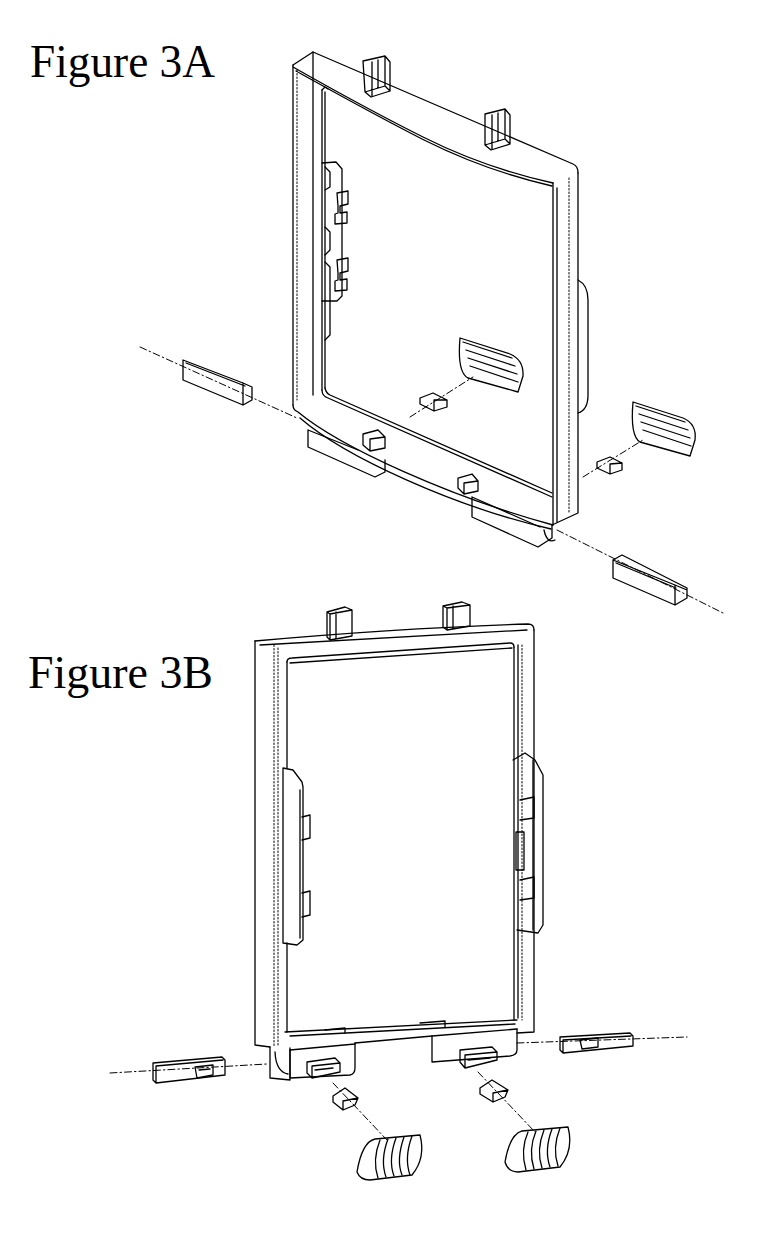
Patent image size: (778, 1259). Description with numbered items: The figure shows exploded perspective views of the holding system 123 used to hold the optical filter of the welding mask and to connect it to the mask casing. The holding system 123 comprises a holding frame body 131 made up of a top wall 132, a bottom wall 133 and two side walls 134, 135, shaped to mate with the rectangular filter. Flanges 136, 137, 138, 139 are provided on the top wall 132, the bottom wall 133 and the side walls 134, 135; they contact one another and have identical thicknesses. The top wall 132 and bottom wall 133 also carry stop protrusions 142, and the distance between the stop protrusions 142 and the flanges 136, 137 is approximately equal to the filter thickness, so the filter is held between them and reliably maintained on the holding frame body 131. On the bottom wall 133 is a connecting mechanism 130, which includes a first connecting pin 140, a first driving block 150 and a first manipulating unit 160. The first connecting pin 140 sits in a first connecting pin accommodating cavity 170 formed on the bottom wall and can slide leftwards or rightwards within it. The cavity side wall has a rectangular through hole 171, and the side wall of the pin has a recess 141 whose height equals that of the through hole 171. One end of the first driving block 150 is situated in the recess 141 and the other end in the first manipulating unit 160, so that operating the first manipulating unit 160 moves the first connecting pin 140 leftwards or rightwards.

In FIG. 3A, the holding system 123 is at (620, 75).
In FIG. 3B, the holding system 123 is at (662, 1117).
In FIG. 3A, the connecting mechanism 130 is at (680, 537).
In FIG. 3B, the connecting mechanism 130 is at (214, 1169).
In FIG. 3A, the holding frame body 131 is at (292, 133).
In FIG. 3B, the holding frame body 131 is at (255, 642).
In FIG. 3A, the top wall 132 is at (312, 62).
In FIG. 3B, the top wall 132 is at (386, 630).
In FIG. 3A, the bottom wall 133 is at (333, 420).
In FIG. 3A, the side wall 134 is at (563, 220).
In FIG. 3B, the side wall 134 is at (267, 762).
In FIG. 3A, the side wall 135 is at (307, 213).
In FIG. 3B, the side wall 135 is at (515, 682).
In FIG. 3B, the flange 136 is at (410, 653).
In FIG. 3A, the flange 137 is at (460, 450).
In FIG. 3B, the flange 137 is at (468, 1017).
In FIG. 3B, the flange 138 is at (300, 751).
In FIG. 3A, the flange 139 is at (325, 135).
In FIG. 3B, the flange 139 is at (523, 718).
In FIG. 3A, the first connecting pin 140 is at (643, 582).
In FIG. 3B, the first connecting pin 140 is at (178, 1058).
In FIG. 3B, the recess 141 is at (203, 1078).
In FIG. 3A, the stop protrusions 142 is at (383, 452).
In FIG. 3A, the first driving block 150 is at (618, 468).
In FIG. 3B, the first driving block 150 is at (338, 1100).
In FIG. 3A, the first manipulating unit 160 is at (690, 435).
In FIG. 3B, the first manipulating unit 160 is at (363, 1170).
In FIG. 3A, the first connecting pin accommodating cavity 170 is at (552, 542).
In FIG. 3B, the first connecting pin accommodating cavity 170 is at (272, 1075).
In FIG. 3B, the through hole 171 is at (323, 1072).